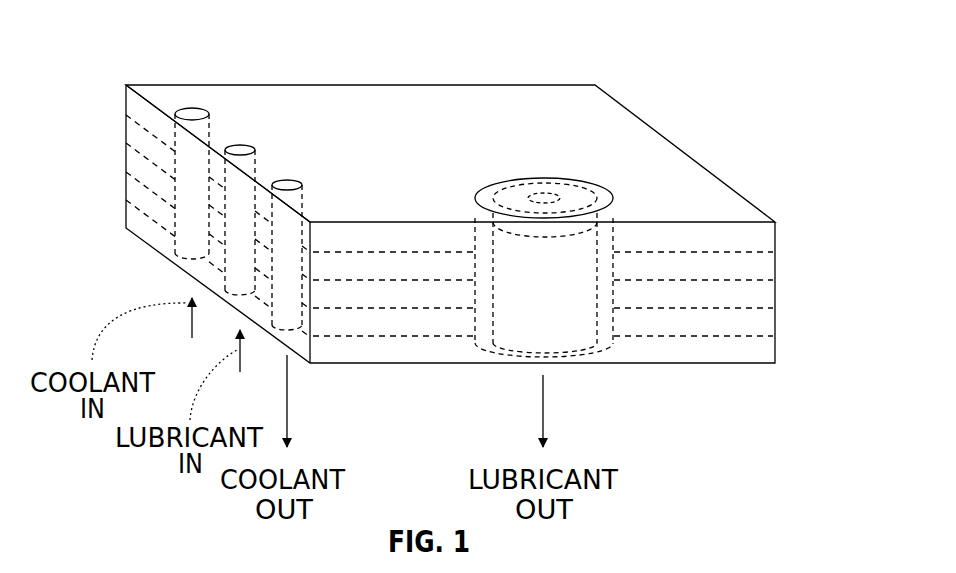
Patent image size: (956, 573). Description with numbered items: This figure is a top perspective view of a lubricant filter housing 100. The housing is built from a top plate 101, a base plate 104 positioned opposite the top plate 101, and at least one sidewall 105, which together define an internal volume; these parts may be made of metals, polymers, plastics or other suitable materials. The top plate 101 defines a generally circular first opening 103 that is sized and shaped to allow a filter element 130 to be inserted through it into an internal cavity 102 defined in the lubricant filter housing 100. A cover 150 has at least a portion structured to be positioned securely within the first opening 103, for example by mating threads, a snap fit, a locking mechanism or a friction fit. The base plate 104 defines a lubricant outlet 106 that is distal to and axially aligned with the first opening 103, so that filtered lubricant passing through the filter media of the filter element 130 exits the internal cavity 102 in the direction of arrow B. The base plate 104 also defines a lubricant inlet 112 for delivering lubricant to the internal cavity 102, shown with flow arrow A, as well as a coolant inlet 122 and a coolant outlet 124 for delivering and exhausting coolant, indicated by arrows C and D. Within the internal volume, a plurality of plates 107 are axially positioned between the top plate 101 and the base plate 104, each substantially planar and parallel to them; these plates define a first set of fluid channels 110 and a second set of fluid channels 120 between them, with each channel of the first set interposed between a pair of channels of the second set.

The lubricant filter housing 100 is at (606, 40).
The top plate 101 is at (303, 100).
The internal cavity 102 is at (613, 208).
The first opening 103 is at (607, 190).
The base plate 104 is at (500, 363).
The sidewall 105 is at (126, 100).
The lubricant outlet 106 is at (568, 363).
The plurality of plates 107 is at (169, 172).
The first set of fluid channels 110 is at (440, 267).
The lubricant inlet 112 is at (228, 335).
The second set of fluid channels 120 is at (373, 235).
The coolant inlet 122 is at (185, 273).
The coolant outlet 124 is at (300, 366).
The filter element 130 is at (604, 238).
The cover 150 is at (578, 178).
The lubricant in direction arrow A is at (238, 358).
The filtered lubricant exit direction arrow B is at (550, 393).
The coolant in direction arrow C is at (190, 315).
The coolant out direction arrow D is at (286, 378).